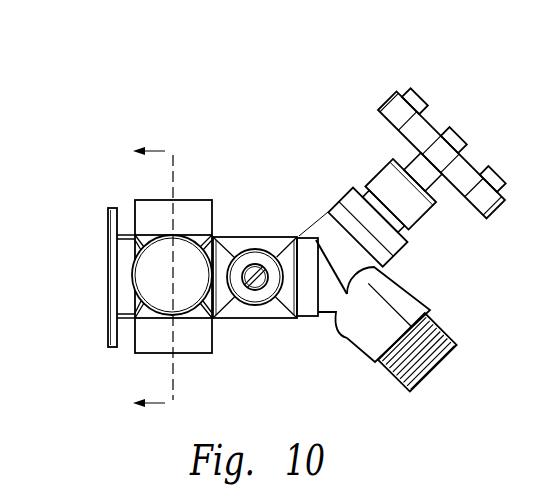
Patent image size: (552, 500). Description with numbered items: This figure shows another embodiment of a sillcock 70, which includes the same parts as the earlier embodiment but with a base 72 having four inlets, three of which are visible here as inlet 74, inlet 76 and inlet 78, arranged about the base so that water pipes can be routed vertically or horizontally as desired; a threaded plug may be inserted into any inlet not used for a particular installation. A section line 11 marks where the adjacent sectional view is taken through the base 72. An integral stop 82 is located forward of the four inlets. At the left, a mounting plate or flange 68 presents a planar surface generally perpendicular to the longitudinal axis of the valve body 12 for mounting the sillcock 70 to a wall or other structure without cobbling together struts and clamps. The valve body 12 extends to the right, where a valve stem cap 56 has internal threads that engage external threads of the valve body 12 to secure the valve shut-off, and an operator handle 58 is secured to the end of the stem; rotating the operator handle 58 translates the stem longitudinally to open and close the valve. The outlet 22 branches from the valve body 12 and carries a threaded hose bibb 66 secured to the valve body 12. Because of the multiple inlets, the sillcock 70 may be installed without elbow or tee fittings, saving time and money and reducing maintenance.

The sillcock 70 is at (341, 44).
The integral stop 82 is at (250, 180).
The operator handle 58 is at (447, 150).
The valve stem cap 56 is at (412, 212).
The threaded hose bibb 66 is at (448, 330).
The outlet 22 is at (365, 350).
The valve body 12 is at (313, 268).
The inlet 78 is at (188, 318).
The inlet 76 is at (190, 355).
The base 72 is at (136, 316).
The inlet 74 is at (152, 200).
The mounting plate or flange 68 is at (106, 240).
The section line 11- 11 is at (133, 277).